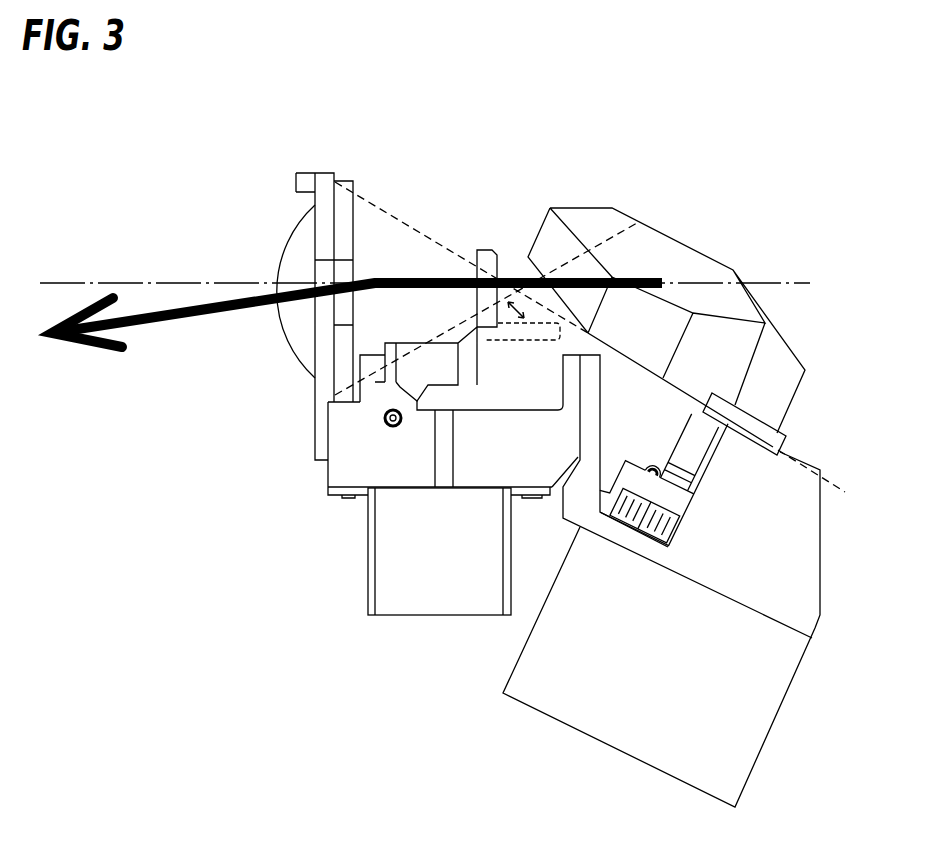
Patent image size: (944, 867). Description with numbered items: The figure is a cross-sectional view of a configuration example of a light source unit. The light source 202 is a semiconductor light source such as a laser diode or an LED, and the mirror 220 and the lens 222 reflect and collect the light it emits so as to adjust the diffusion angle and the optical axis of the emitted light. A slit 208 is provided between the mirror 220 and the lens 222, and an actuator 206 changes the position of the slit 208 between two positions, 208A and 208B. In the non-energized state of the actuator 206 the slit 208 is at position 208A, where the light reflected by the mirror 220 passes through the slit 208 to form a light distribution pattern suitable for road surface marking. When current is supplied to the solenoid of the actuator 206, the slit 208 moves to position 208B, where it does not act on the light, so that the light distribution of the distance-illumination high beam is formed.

The light source 202 is at (656, 455).
The actuator 206 is at (363, 423).
The slit 208 is at (487, 248).
The slit position in non-energized state 208A is at (511, 250).
The slit position in energized state 208B is at (508, 341).
The mirror 220 is at (683, 238).
The lens 222 is at (287, 237).